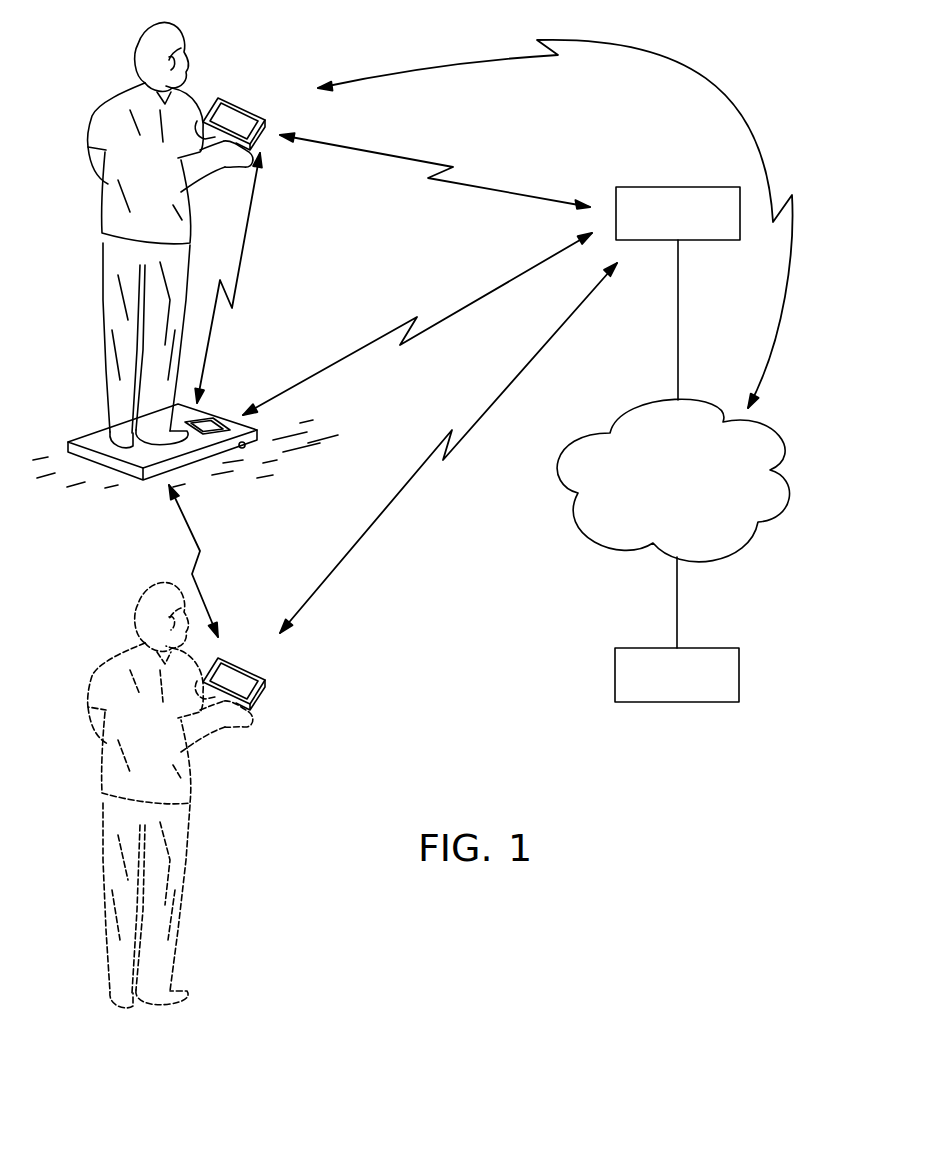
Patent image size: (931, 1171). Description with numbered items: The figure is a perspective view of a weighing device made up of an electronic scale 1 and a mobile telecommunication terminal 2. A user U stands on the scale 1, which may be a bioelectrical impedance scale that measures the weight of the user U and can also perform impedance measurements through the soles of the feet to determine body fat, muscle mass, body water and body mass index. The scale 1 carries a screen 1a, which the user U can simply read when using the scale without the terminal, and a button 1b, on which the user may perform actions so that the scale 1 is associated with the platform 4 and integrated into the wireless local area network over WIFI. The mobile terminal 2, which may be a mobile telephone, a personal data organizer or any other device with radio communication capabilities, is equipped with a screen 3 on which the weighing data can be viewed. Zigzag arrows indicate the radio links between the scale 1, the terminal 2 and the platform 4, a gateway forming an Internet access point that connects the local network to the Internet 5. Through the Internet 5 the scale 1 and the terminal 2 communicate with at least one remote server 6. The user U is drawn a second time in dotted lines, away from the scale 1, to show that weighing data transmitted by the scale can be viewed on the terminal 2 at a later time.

The user U is at (101, 86).
The electronic scale 1 is at (190, 463).
The screen of the scale 1a is at (208, 423).
The button 1b is at (246, 448).
The mobile telecommunication terminal 2 is at (225, 107).
The screen 3 is at (247, 120).
The platform 4 is at (675, 187).
The Internet 5 is at (770, 433).
The remote server 6 is at (615, 678).